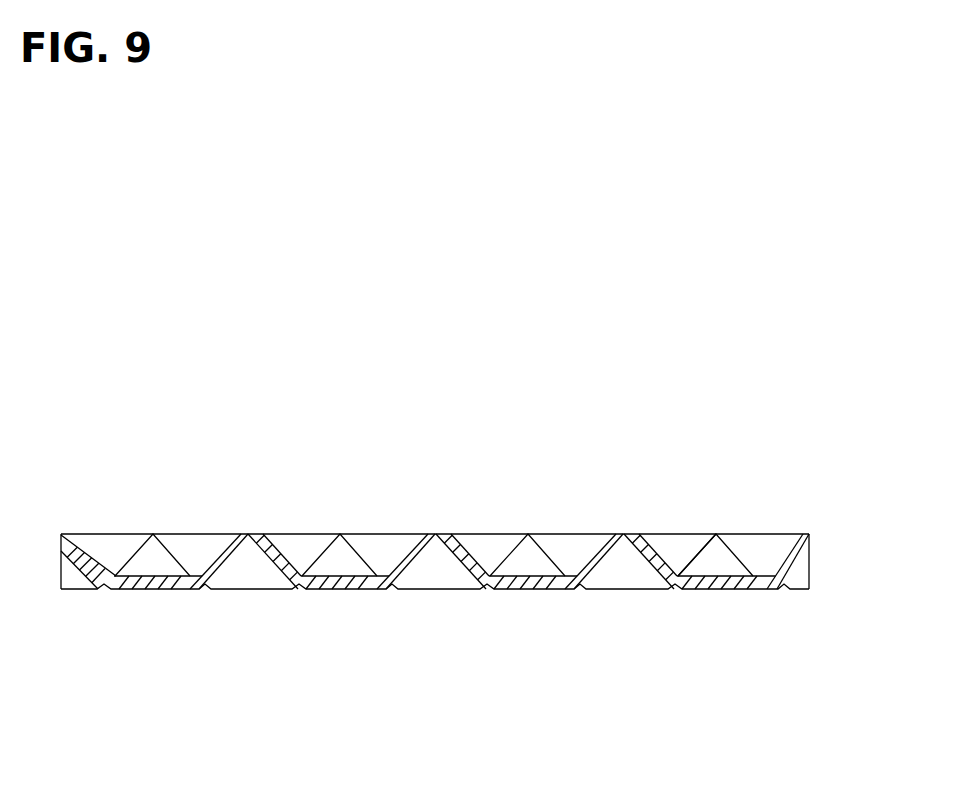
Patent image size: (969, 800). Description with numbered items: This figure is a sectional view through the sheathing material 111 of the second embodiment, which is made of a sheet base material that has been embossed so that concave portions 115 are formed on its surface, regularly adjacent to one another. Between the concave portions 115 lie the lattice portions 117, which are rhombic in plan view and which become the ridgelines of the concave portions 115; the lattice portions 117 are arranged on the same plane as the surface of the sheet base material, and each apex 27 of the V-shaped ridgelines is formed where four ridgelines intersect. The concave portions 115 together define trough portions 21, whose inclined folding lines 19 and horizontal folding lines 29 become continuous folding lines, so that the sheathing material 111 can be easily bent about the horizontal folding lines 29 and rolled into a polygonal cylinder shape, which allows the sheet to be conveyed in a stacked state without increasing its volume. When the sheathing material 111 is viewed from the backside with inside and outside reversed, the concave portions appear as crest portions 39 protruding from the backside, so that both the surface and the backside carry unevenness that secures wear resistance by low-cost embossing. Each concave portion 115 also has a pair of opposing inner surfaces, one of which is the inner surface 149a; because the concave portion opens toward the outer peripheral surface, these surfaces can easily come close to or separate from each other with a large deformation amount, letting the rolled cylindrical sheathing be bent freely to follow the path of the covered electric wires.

The sheathing material 111 is at (664, 372).
The concave portion 115 is at (116, 558).
The lattice portion 117 is at (192, 533).
The apex 27 is at (150, 533).
The trough portion 21 is at (468, 431).
The inclined folding line 19 is at (276, 558).
The horizontal folding line 29 is at (332, 578).
The crest portion 39 is at (154, 592).
The opposing inner surface 149a is at (689, 540).